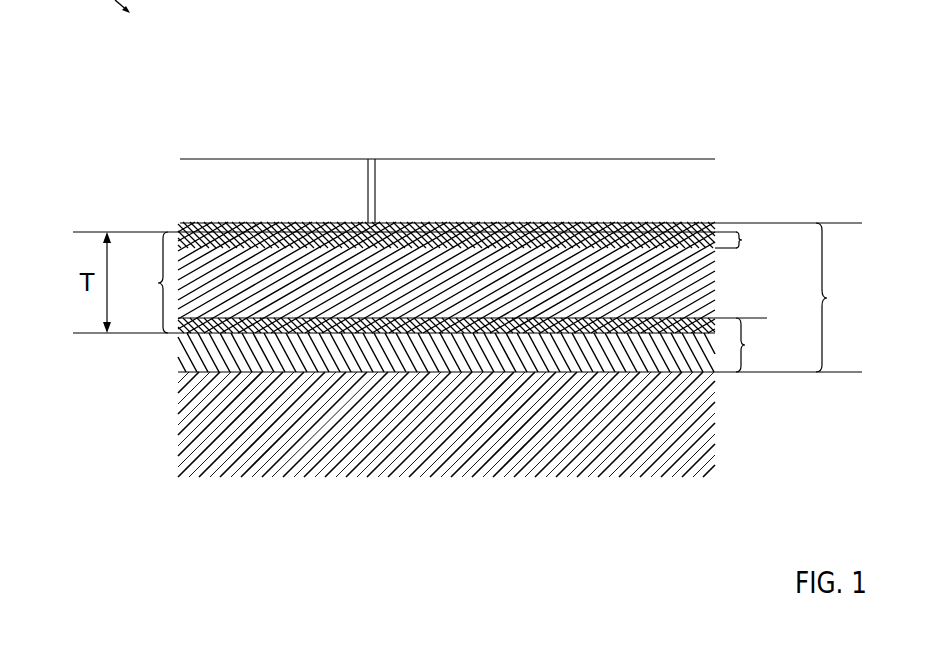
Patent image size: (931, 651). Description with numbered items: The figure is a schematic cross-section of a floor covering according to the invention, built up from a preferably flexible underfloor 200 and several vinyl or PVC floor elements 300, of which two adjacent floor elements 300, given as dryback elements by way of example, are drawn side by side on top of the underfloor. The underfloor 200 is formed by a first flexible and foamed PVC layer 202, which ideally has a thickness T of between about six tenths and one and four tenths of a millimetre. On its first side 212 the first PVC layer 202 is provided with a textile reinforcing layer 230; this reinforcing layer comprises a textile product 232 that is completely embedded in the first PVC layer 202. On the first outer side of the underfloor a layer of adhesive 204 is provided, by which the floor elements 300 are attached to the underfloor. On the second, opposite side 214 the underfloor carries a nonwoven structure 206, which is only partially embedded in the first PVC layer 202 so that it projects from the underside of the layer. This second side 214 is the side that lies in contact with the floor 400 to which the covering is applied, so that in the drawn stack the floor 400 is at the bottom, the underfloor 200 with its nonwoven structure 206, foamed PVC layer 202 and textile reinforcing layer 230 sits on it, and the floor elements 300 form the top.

The underfloor 200 is at (520, 297).
The first flexible and foamed PVC layer 202 is at (394, 277).
The layer of adhesive 204 is at (185, 222).
The nonwoven structure 206 is at (479, 345).
The first side 212 is at (537, 158).
The second, opposite side 214 is at (328, 478).
The textile reinforcing layer 230 is at (477, 237).
The textile product 232 is at (170, 230).
The vinyl or PVC floor element 300 is at (241, 203).
The floor 400 is at (242, 405).